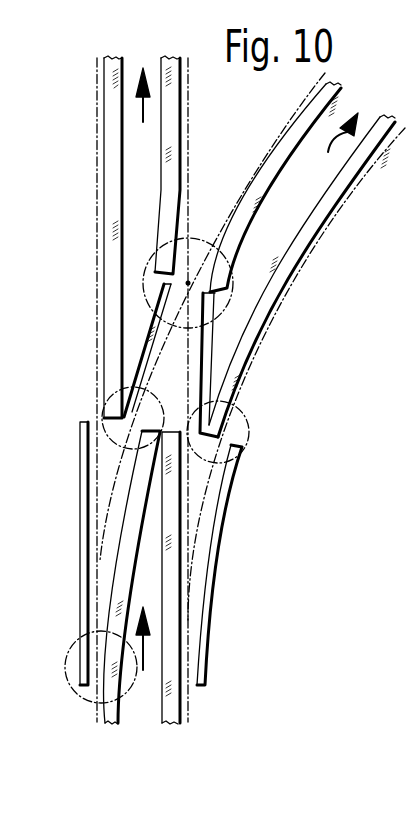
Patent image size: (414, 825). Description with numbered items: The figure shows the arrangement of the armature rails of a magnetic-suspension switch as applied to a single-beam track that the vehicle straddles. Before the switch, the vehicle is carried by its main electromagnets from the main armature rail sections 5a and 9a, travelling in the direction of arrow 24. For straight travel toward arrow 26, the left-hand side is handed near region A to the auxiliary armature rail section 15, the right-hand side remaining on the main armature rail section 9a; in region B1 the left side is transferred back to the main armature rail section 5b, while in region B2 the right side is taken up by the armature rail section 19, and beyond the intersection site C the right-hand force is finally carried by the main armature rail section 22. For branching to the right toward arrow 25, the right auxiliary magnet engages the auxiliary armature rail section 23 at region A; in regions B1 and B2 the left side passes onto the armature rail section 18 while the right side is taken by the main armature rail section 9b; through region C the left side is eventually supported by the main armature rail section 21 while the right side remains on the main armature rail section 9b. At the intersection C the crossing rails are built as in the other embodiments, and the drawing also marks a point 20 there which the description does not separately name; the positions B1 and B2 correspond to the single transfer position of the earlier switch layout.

The main armature rail section 5a is at (115, 599).
The main armature rail section 5b is at (113, 115).
The main armature rail section 9a is at (168, 580).
The main armature rail section 9b is at (302, 236).
The armature rail section 15 is at (86, 522).
The armature rail section 18 is at (148, 348).
The armature rail section 19 is at (207, 358).
The pivot point 20 is at (188, 283).
The main armature rail section 21 is at (277, 170).
The main armature rail section 22 is at (170, 170).
The auxiliary armature rail section 23 is at (218, 505).
The arrow 24 is at (143, 649).
The arrow 25 is at (357, 158).
The arrow 26 is at (143, 108).
The region A is at (73, 689).
The region B1 is at (148, 450).
The region B2 is at (252, 442).
The intersection site C is at (232, 306).